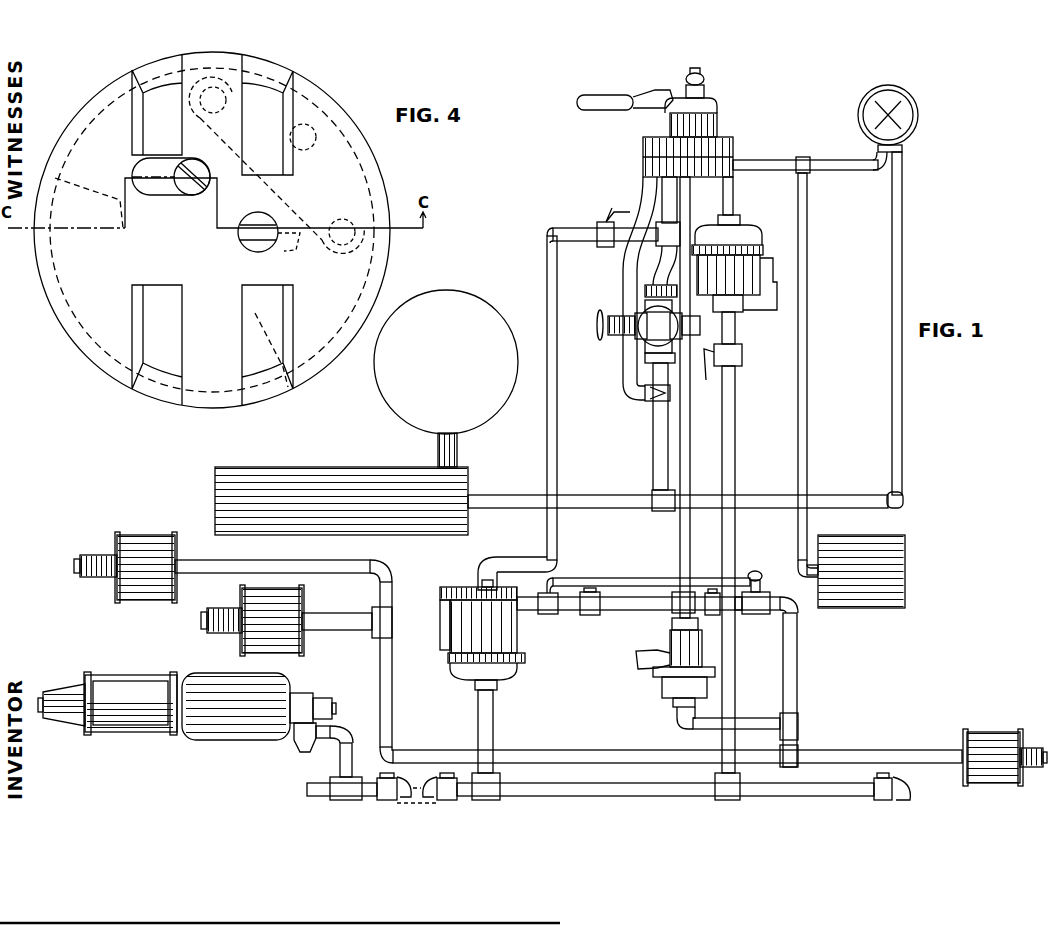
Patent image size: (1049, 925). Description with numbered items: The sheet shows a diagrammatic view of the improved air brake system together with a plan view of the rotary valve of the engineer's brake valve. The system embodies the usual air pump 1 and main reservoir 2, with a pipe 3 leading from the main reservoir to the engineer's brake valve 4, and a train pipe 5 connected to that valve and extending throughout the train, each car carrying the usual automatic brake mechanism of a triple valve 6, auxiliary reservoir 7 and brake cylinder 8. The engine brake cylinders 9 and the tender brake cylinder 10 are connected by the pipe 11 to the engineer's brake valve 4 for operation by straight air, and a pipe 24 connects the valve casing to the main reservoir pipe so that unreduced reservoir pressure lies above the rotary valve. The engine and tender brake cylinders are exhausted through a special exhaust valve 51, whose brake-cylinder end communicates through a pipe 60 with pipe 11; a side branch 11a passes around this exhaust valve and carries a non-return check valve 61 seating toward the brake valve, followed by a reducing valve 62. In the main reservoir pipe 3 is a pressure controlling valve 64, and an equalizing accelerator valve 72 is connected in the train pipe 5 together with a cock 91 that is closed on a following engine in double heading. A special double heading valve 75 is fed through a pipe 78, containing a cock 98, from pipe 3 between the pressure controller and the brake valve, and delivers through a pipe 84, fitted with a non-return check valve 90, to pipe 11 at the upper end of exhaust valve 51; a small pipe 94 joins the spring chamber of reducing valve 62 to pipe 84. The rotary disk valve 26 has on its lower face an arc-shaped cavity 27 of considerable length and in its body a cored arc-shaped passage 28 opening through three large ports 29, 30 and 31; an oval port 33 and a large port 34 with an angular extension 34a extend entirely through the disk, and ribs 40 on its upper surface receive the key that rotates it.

In FIG. 1, the air pump 1 is at (384, 389).
In FIG. 1, the main reservoir 2 is at (381, 472).
In FIG. 1, the main reservoir pipe 3 is at (664, 193).
In FIG. 1, the engineer's brake valve 4 is at (643, 148).
In FIG. 1, the train pipe 5 is at (734, 193).
In FIG. 1, the triple valve 6 is at (293, 752).
In FIG. 1, the auxiliary reservoir 7 is at (221, 680).
In FIG. 1, the brake cylinder 8 is at (136, 689).
In FIG. 1, the engine brake cylinders 9 is at (245, 596).
In FIG. 1, the tender brake cylinder 10 is at (983, 740).
In FIG. 1, the engine brake cylinder pipe 11 is at (691, 424).
In FIG. 1, the side branch 11a is at (797, 684).
In FIG. 1, the pipe 24 is at (624, 270).
In FIG. 4, the rotary disk valve 26 is at (104, 94).
In FIG. 4, the arc-shaped cavity 27 is at (212, 230).
In FIG. 4, the arc-shaped passage 28 is at (276, 165).
In FIG. 4, the port 29 is at (220, 106).
In FIG. 4, the port 30 is at (307, 145).
In FIG. 4, the port 31 is at (350, 241).
In FIG. 4, the oval port 33 is at (163, 193).
In FIG. 4, the port 34 is at (247, 244).
In FIG. 4, the angular extension 34a is at (292, 249).
In FIG. 4, the ribs 40 is at (150, 139).
In FIG. 1, the brake cylinder exhaust valve 51 is at (665, 699).
In FIG. 1, the pipe 60 is at (748, 724).
In FIG. 1, the non-return check valve 61 is at (716, 590).
In FIG. 1, the reducing valve 62 is at (758, 615).
In FIG. 1, the pressure controlling valve 64 is at (648, 395).
In FIG. 1, the equalizing accelerator valve 72 is at (739, 274).
In FIG. 1, the double heading valve 75 is at (460, 645).
In FIG. 1, the pipe 78 is at (517, 409).
In FIG. 1, the pipe 84 is at (636, 612).
In FIG. 1, the non-return check valve 90 is at (595, 591).
In FIG. 1, the cock 91 is at (744, 356).
In FIG. 1, the small pipe 94 is at (648, 586).
In FIG. 1, the cock 98 is at (602, 220).